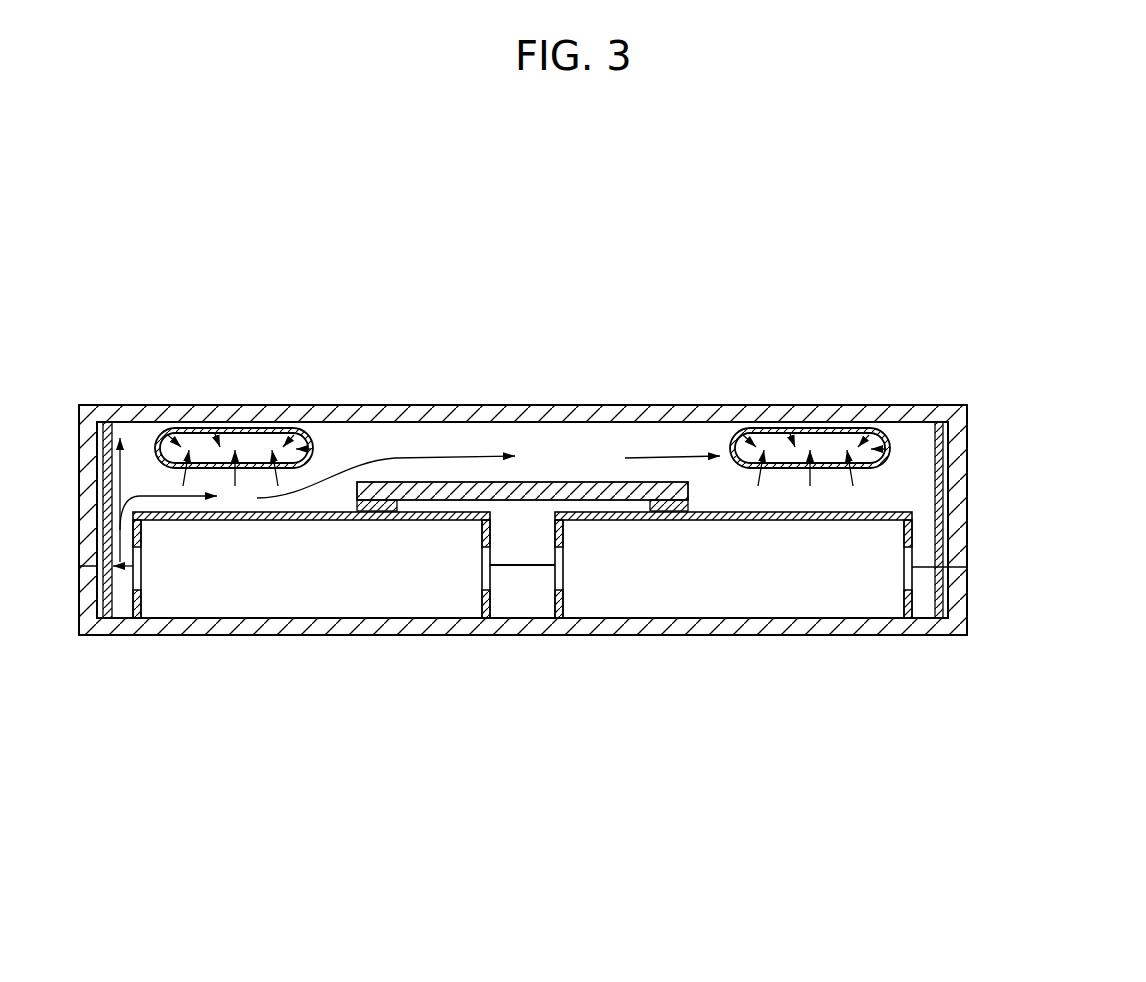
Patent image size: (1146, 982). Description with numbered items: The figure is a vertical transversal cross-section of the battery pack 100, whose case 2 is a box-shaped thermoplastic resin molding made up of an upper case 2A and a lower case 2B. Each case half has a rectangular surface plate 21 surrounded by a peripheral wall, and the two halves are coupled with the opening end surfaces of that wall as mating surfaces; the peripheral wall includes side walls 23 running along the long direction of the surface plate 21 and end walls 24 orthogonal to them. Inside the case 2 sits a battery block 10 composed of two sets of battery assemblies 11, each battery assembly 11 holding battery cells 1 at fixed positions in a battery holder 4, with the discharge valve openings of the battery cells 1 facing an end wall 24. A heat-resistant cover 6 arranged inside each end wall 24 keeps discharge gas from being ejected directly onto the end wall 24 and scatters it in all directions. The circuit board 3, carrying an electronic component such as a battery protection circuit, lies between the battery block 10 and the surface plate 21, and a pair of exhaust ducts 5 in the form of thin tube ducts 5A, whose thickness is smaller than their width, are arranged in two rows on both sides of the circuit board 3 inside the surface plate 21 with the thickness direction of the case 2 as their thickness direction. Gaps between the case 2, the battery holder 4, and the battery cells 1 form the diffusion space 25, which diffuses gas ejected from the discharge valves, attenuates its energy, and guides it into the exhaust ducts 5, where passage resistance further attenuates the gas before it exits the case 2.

The battery pack 100 is at (962, 188).
The case 2 is at (998, 355).
The upper case 2A is at (967, 247).
The lower case 2B is at (967, 800).
The surface plate 21 is at (478, 413).
The side wall 23 is at (597, 440).
The end wall 24 is at (87, 473).
The diffusion space 25 is at (133, 474).
The circuit board 3 is at (532, 490).
The exhaust duct 5 is at (522, 391).
The thin tube duct 5A is at (313, 445).
The heat-resistant cover 6 is at (113, 587).
The battery cell 1 is at (326, 591).
The battery holder 4 is at (243, 515).
The battery assembly 11 is at (397, 618).
The battery block 10 is at (667, 708).